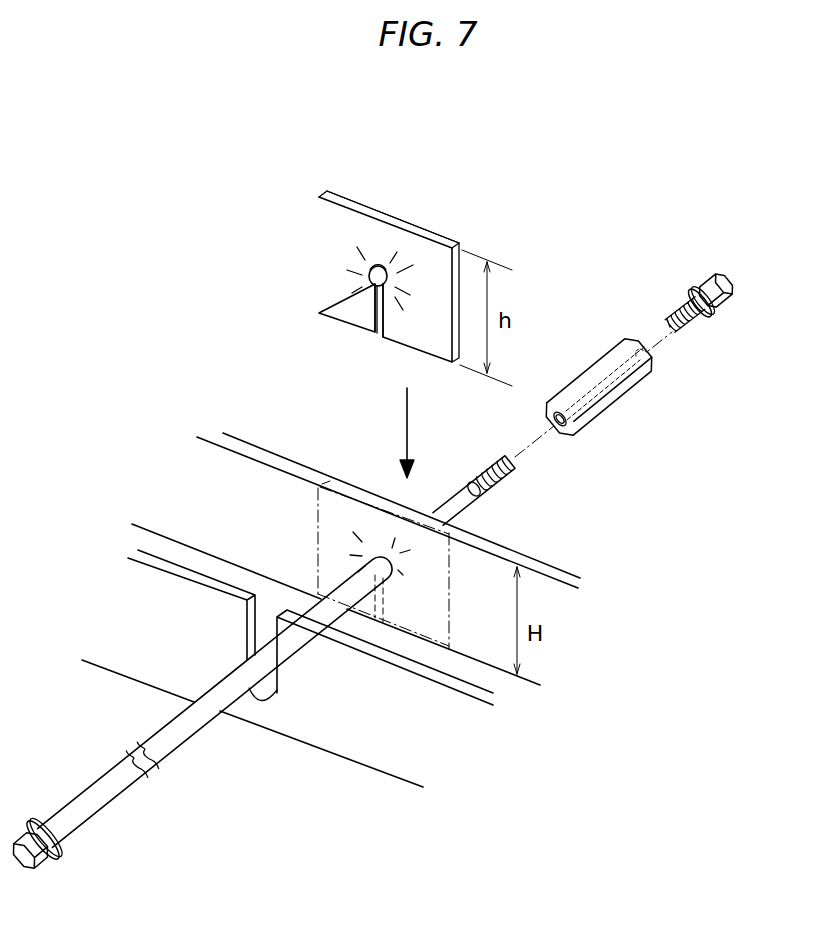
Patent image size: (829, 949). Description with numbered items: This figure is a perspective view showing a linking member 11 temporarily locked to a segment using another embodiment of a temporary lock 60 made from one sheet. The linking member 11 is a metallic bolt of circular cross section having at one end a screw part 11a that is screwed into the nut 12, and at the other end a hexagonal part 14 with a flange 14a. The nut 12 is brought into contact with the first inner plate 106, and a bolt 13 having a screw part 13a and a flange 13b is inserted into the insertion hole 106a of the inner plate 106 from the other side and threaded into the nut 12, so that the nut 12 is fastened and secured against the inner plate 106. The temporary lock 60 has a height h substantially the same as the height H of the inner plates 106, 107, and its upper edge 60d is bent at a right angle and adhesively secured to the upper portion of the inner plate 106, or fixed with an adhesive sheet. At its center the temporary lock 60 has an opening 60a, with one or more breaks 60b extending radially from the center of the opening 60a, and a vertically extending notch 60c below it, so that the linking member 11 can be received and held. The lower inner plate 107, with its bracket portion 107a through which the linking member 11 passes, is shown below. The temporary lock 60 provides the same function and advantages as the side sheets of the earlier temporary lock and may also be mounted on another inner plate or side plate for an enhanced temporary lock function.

The temporary lock 60 is at (337, 243).
The opening 60a is at (375, 282).
The break 60b is at (378, 262).
The notch 60c is at (370, 332).
The upper edge of spacer plate 60d is at (345, 202).
The bolt 13 is at (703, 331).
The screw part 13a is at (680, 318).
The flange 13b is at (710, 322).
The nut 12 is at (600, 392).
The linking member 11 is at (188, 723).
The screw part 11a is at (499, 489).
The inner plate 106 is at (565, 617).
The insertion hole 106a is at (378, 552).
The inner plate 107 is at (370, 750).
The bracket of lower frame rail 107a is at (267, 707).
The hexagonal part 14 is at (33, 870).
The flange 14a is at (63, 852).